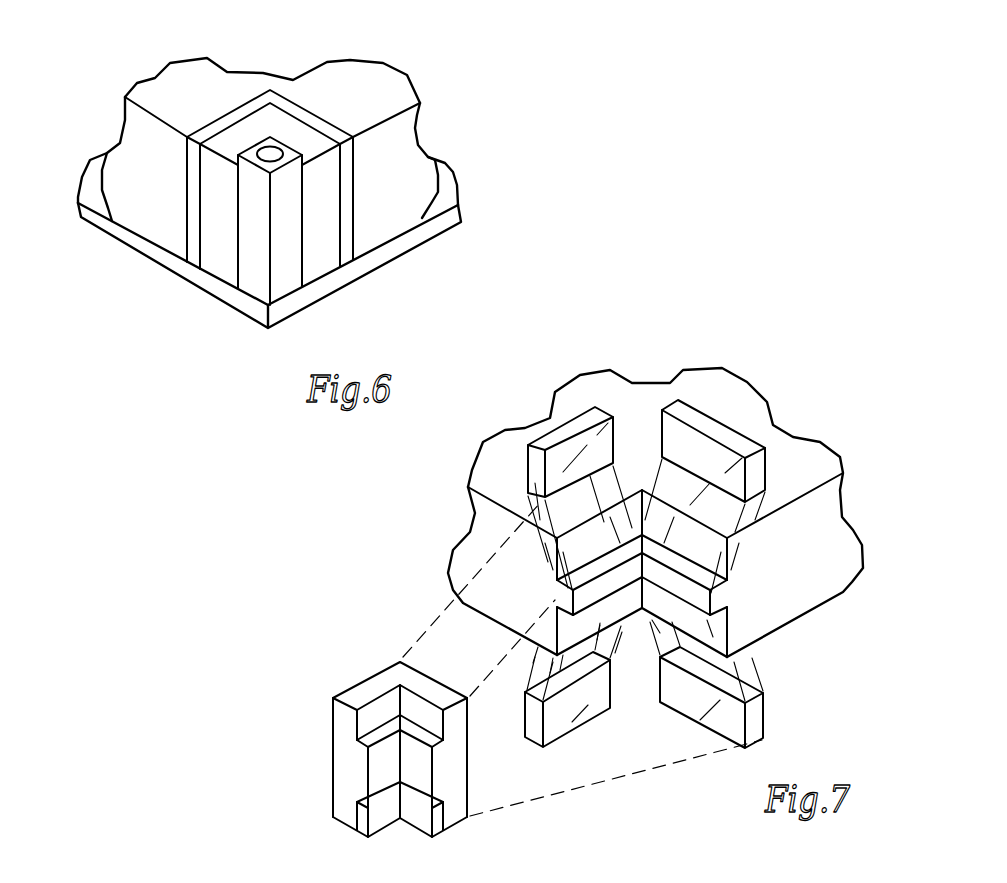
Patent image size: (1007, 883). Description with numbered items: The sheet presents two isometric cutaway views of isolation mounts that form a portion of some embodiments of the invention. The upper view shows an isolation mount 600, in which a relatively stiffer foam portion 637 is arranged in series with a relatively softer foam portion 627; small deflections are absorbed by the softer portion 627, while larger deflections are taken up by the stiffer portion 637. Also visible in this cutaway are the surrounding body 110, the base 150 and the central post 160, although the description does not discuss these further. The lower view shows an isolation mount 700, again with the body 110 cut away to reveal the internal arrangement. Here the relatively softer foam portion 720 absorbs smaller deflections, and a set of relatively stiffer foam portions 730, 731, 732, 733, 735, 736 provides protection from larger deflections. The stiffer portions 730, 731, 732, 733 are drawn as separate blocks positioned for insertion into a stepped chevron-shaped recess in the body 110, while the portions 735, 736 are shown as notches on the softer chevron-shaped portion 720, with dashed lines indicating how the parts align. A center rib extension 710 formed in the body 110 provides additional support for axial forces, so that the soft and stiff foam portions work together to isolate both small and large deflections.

In FIG. 6, the isolation mount 600 is at (118, 53).
In FIG. 6, the substrate 110 is at (150, 92).
In FIG. 7, the substrate 110 is at (808, 450).
In FIG. 6, the base layer 150 is at (307, 302).
In FIG. 6, the center conductor column 160 is at (255, 265).
In FIG. 6, the relatively softer foam portion 627 is at (222, 248).
In FIG. 6, the relatively stiffer foam portion 637 is at (348, 238).
In FIG. 7, the isolation mount 700 is at (843, 412).
In FIG. 7, the center rib extension 710 is at (720, 598).
In FIG. 7, the relatively softer foam portion 720 is at (373, 680).
In FIG. 7, the relatively stiffer foam portion 730 is at (528, 488).
In FIG. 7, the relatively stiffer foam portion 731 is at (688, 398).
In FIG. 7, the relatively stiffer foam portion 732 is at (545, 748).
In FIG. 7, the relatively stiffer foam portion 733 is at (765, 735).
In FIG. 7, the relatively stiffer foam portion 735 is at (360, 728).
In FIG. 7, the relatively stiffer foam portion 736 is at (360, 815).